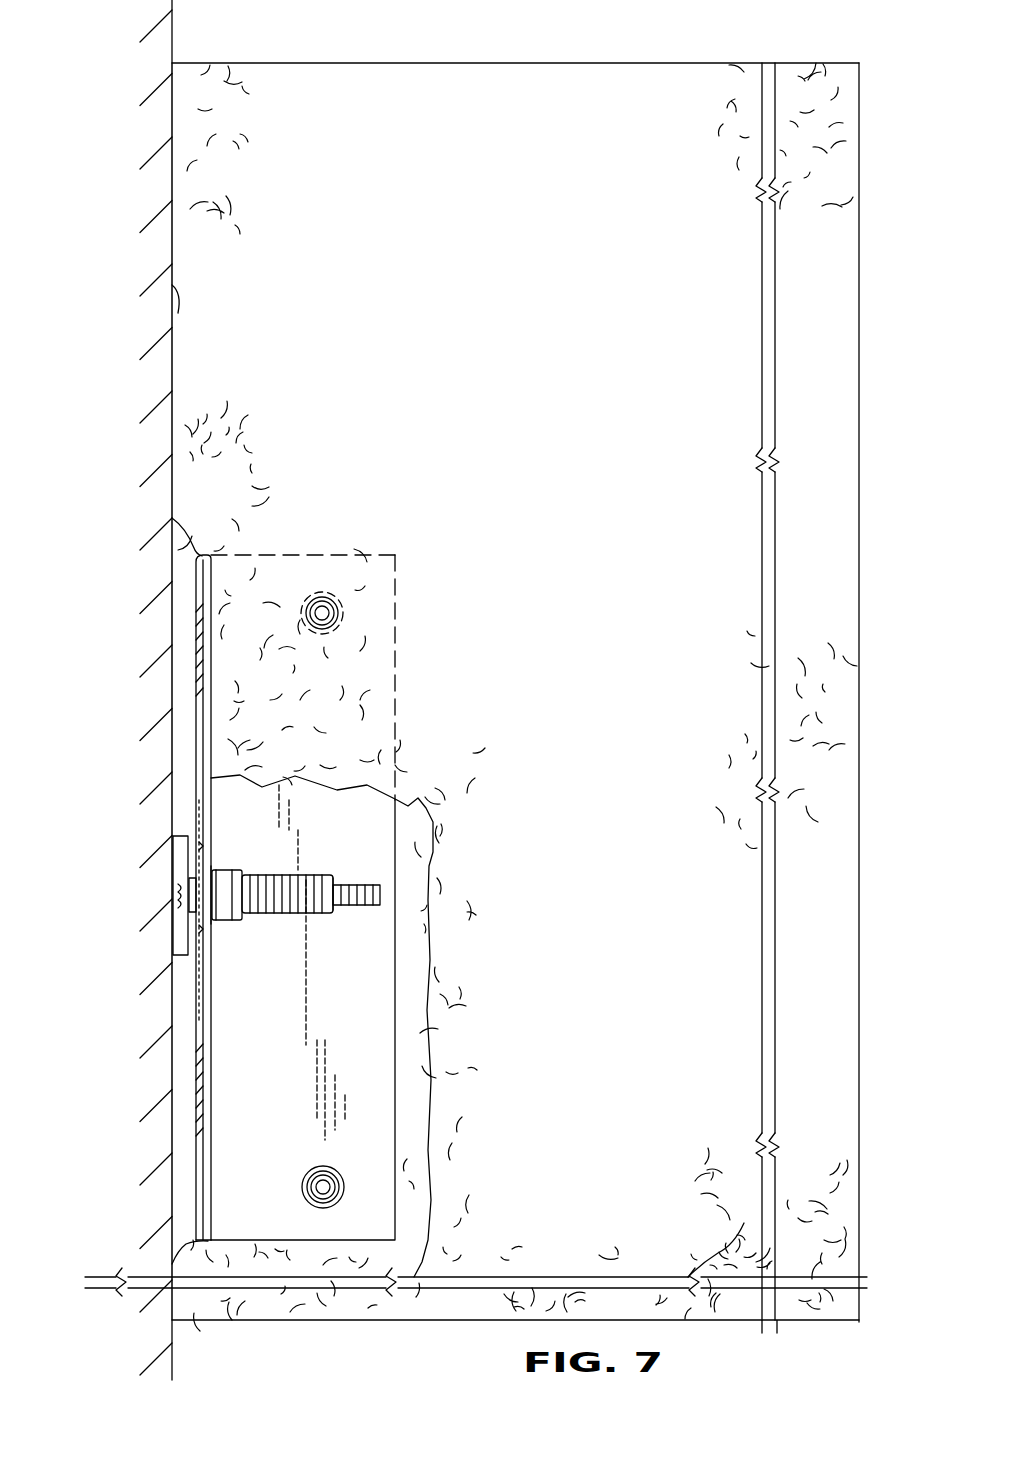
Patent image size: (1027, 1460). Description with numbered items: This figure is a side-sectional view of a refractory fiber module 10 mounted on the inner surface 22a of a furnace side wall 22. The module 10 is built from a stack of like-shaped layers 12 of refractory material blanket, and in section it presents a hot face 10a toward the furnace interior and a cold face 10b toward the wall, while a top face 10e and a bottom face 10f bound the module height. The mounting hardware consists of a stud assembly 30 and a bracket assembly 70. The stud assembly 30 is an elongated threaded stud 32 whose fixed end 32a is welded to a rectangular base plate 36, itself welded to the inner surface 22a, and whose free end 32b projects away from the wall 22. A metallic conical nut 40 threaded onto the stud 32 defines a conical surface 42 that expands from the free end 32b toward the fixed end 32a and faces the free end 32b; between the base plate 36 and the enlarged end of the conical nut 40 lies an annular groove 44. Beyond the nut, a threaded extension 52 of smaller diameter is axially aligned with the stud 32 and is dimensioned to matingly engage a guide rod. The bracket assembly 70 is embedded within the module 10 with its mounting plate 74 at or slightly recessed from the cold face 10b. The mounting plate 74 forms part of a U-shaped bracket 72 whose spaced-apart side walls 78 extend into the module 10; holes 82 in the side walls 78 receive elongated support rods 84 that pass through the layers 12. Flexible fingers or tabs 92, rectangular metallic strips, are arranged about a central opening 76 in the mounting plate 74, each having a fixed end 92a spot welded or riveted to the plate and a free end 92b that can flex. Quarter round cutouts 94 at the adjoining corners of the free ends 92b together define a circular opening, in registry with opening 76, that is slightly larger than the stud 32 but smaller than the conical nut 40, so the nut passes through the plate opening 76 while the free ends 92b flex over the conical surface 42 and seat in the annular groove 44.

The refractory fiber module 10 is at (471, 679).
The hot face 10a is at (859, 498).
The cold face 10b is at (172, 440).
The top face 10e is at (512, 62).
The bottom face 10f is at (452, 1320).
The layers of refractory material blanket 12 is at (690, 95).
The furnace side wall 22 is at (176, 41).
The inner surface 22a is at (172, 312).
The stud assembly 30 is at (313, 900).
The stud 32 is at (278, 882).
The fixed end 32a is at (178, 897).
The free end 32b is at (337, 915).
The base plate 36 is at (178, 852).
The conical nut 40 is at (244, 917).
The conical surface 42 is at (234, 922).
The annular groove 44 is at (205, 924).
The threaded extension 52 is at (380, 884).
The bracket assembly 70 is at (172, 860).
The U-shaped bracket 72 is at (196, 648).
The mounting plate 74 is at (206, 1052).
The central opening 76 is at (183, 877).
The side walls 78 is at (375, 1040).
The holes 82 is at (325, 605).
The support rods 84 is at (340, 612).
The flexible fingers or tabs 92 is at (210, 852).
The fixed end 92a is at (210, 668).
The free end 92b is at (200, 860).
The quarter round cutouts 94 is at (214, 866).